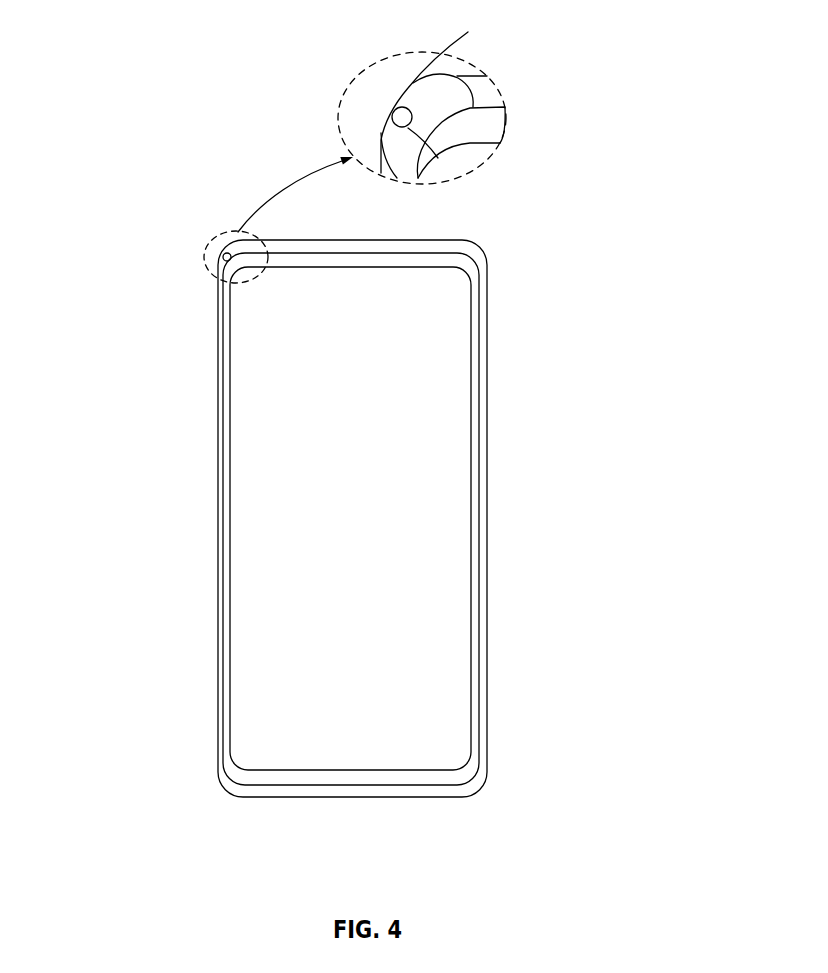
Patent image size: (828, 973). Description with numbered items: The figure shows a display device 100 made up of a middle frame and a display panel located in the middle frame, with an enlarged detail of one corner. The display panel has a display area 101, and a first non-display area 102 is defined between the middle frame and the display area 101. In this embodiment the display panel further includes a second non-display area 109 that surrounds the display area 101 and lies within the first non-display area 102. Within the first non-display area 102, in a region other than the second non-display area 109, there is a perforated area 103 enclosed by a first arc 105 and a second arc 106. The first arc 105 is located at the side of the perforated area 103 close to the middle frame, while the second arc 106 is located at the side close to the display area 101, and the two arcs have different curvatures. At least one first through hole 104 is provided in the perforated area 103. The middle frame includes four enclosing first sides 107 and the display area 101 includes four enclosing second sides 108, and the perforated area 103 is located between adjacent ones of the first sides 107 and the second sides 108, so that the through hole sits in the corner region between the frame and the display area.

The display device 100 is at (182, 150).
The display area 101 is at (293, 473).
The first non-display area 102 is at (590, 72).
The perforated area 103 is at (423, 102).
The first through hole 104 is at (393, 121).
The first arc 105 is at (434, 86).
The second arc 106 is at (438, 158).
The first side 107 is at (460, 76).
The second side 108 is at (483, 145).
The second non-display area 109 is at (473, 128).